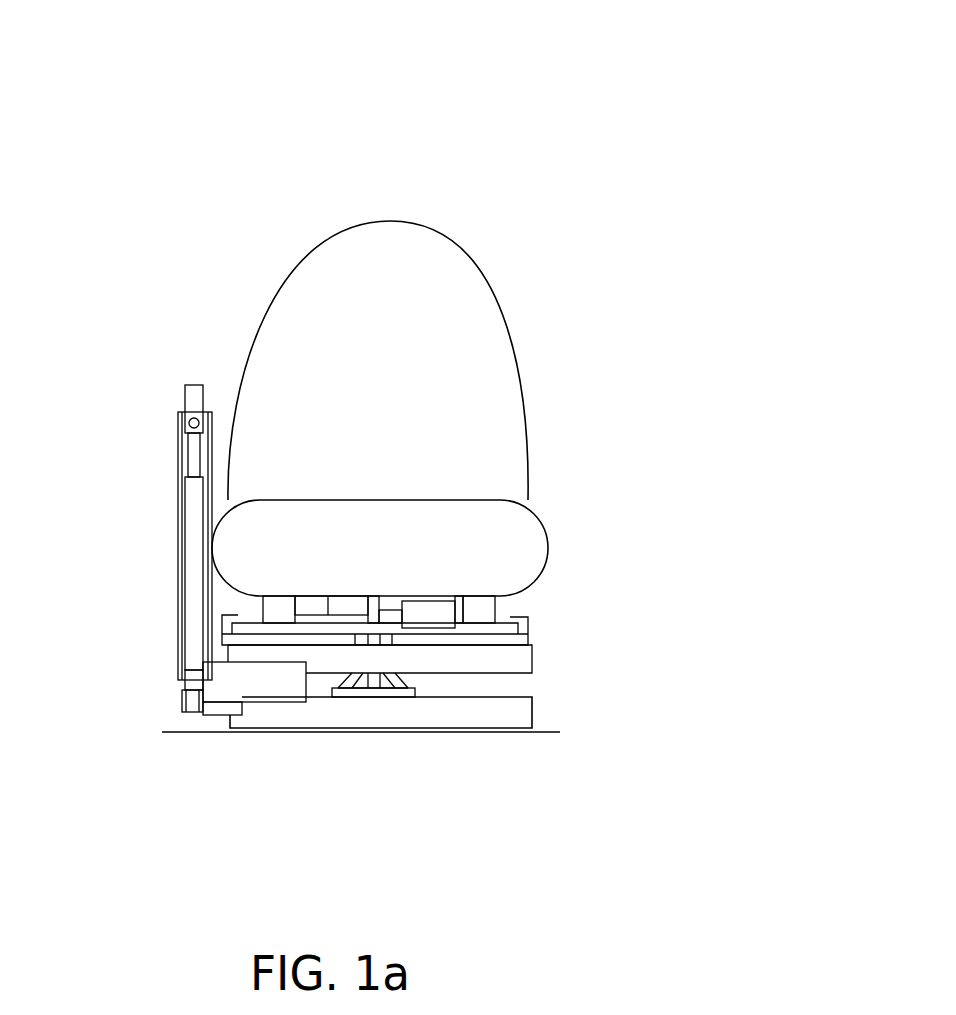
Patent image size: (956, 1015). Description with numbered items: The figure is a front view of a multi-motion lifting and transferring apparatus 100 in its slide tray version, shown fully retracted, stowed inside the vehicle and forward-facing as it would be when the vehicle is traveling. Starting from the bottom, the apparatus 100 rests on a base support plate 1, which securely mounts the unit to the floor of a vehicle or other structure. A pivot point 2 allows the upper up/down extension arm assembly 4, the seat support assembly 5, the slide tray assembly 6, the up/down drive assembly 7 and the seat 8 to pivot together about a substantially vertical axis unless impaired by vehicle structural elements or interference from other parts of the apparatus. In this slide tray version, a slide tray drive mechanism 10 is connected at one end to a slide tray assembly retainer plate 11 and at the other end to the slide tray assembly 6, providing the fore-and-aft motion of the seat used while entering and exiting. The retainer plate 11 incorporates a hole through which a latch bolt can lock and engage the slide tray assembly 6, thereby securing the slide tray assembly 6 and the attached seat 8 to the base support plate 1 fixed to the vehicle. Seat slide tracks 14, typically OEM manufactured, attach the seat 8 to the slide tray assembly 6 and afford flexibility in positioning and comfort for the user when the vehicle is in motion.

The multi-motion lifting and transferring apparatus 100 is at (724, 44).
The base support plate 1 is at (445, 713).
The pivot point 2 is at (217, 707).
The upper up/down extension arm assembly 4 is at (173, 583).
The seat support assembly 5 is at (520, 661).
The slide tray assembly 6 is at (495, 627).
The up/down drive assembly 7 is at (193, 565).
The seat 8 is at (489, 395).
The slide tray drive mechanism 10 is at (432, 615).
The slide tray assembly retainer plate 11 is at (340, 620).
The seat slide tracks 14 is at (282, 608).